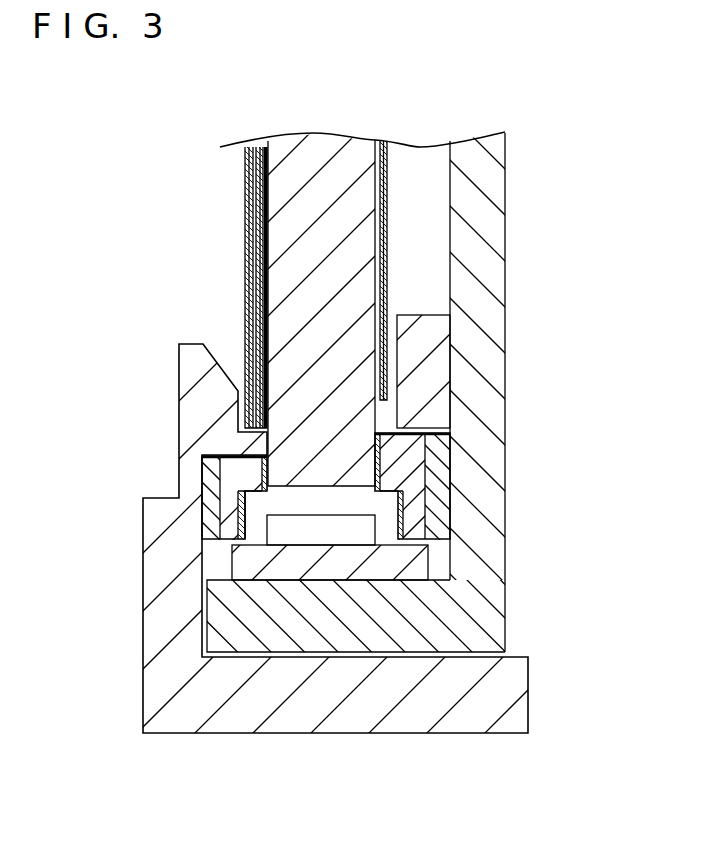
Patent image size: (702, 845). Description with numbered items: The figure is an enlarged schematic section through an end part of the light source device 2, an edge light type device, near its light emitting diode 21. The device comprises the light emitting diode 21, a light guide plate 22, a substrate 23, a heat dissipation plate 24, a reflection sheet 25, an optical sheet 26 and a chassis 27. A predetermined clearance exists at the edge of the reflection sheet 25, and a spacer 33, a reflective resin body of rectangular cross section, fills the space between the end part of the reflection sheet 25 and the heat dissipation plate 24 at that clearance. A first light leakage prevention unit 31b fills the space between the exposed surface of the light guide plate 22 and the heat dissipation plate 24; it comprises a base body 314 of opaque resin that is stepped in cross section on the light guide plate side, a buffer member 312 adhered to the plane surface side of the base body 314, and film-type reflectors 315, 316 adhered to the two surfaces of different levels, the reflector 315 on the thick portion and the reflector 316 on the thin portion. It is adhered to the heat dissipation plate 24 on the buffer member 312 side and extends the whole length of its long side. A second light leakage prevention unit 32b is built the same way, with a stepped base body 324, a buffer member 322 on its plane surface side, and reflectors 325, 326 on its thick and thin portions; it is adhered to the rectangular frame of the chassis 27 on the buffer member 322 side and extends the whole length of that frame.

The light source device 2 is at (110, 183).
The light emitting diode 21 is at (306, 532).
The light guide plate 22 is at (328, 143).
The substrate 23 is at (382, 570).
The heat dissipation plate 24 is at (480, 380).
The reflection sheet 25 is at (387, 160).
The optical sheet 26 is at (248, 190).
The chassis 27 is at (233, 718).
The spacer 33 is at (430, 343).
The buffer member 312 is at (443, 465).
The base body 314 is at (412, 488).
The reflector 315 is at (380, 448).
The reflector 316 is at (410, 527).
The first light leakage prevention unit 31b is at (440, 556).
The buffer member 322 is at (208, 470).
The base body 324 is at (230, 505).
The reflector 325 is at (262, 472).
The reflector 326 is at (243, 522).
The second light leakage prevention unit 32b is at (208, 557).